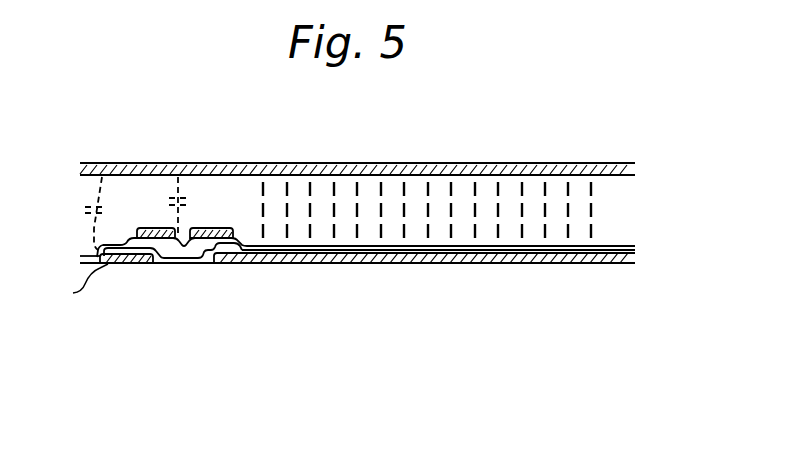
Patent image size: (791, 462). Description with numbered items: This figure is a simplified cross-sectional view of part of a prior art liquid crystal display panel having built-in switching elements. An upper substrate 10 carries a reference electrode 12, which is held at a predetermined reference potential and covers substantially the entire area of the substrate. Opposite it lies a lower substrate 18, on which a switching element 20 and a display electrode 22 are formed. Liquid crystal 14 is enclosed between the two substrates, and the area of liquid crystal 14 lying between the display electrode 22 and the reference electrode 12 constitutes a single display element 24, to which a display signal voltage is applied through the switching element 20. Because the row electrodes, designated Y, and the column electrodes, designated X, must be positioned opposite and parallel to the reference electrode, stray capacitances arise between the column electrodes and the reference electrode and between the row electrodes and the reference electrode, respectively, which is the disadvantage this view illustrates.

The first substrate 10 is at (610, 152).
The reference electrode 12 is at (538, 163).
The liquid crystal material 14 is at (625, 212).
The second substrate 18 is at (612, 277).
The switching element 20 is at (250, 277).
The display electrode 22 is at (328, 262).
The display element 24 is at (605, 277).